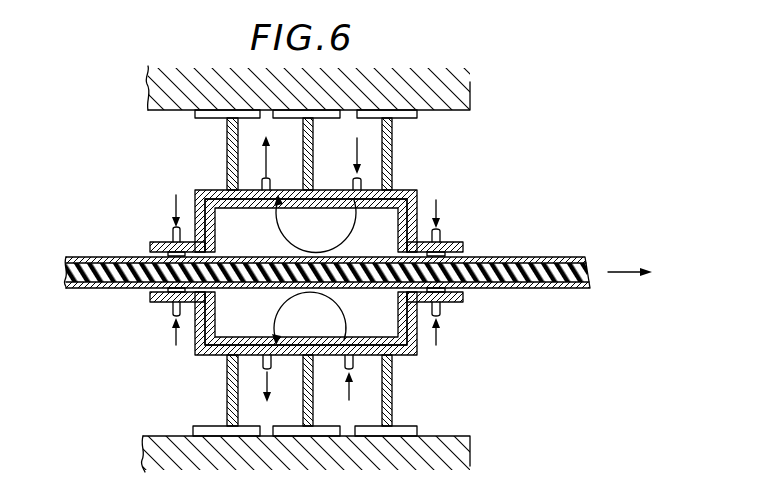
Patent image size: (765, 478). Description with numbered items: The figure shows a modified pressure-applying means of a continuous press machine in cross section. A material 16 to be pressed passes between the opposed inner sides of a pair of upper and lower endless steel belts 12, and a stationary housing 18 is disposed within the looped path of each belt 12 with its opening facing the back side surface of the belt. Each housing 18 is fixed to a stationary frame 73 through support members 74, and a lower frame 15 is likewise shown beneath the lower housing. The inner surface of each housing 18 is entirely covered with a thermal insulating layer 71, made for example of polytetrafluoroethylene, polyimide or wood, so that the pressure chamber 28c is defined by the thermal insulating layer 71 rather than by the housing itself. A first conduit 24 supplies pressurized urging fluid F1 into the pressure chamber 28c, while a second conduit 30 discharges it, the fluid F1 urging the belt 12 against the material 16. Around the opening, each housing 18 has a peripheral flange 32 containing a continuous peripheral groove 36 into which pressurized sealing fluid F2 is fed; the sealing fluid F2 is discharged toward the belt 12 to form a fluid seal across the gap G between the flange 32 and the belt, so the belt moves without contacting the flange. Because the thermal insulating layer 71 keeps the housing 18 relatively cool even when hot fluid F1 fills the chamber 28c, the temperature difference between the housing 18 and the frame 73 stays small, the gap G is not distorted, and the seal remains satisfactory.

The stationary frame 73 is at (465, 97).
The lower press platen 15 is at (470, 458).
The support members 74 is at (227, 150).
The housing 18 is at (419, 192).
The thermal insulating layer 71 is at (398, 206).
The pressure chamber 28c is at (325, 236).
The peripheral flange 32 is at (440, 244).
The peripheral groove 36 is at (447, 253).
The second conduit 30 is at (284, 178).
The first conduit 24 is at (353, 185).
The endless steel belt 12 is at (553, 257).
The material 16 is at (577, 259).
The pressurized urging fluid F1 is at (323, 279).
The pressurized sealing fluid F2 is at (305, 299).
The gap G is at (150, 252).